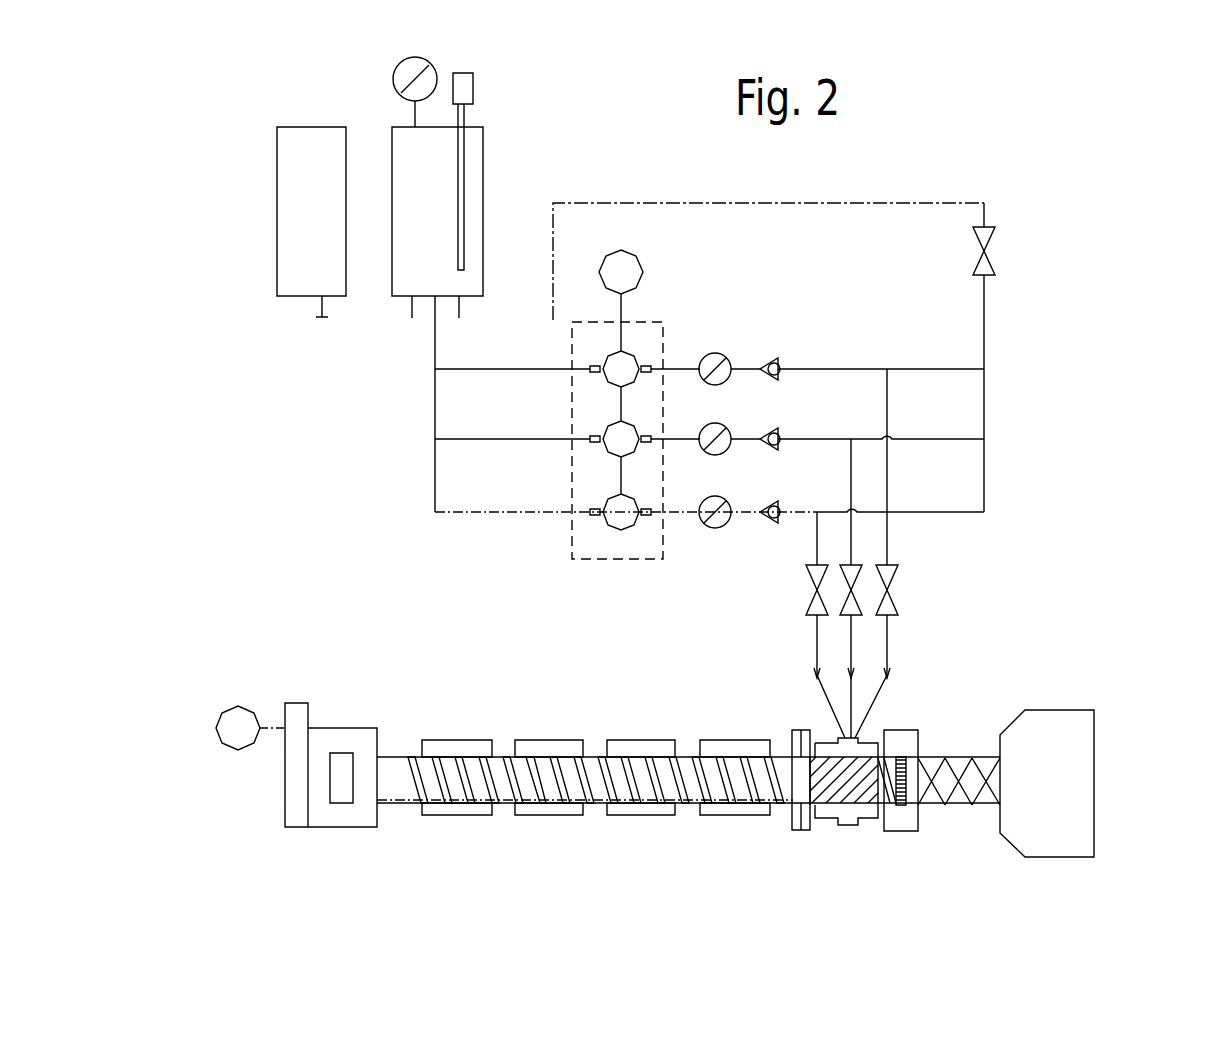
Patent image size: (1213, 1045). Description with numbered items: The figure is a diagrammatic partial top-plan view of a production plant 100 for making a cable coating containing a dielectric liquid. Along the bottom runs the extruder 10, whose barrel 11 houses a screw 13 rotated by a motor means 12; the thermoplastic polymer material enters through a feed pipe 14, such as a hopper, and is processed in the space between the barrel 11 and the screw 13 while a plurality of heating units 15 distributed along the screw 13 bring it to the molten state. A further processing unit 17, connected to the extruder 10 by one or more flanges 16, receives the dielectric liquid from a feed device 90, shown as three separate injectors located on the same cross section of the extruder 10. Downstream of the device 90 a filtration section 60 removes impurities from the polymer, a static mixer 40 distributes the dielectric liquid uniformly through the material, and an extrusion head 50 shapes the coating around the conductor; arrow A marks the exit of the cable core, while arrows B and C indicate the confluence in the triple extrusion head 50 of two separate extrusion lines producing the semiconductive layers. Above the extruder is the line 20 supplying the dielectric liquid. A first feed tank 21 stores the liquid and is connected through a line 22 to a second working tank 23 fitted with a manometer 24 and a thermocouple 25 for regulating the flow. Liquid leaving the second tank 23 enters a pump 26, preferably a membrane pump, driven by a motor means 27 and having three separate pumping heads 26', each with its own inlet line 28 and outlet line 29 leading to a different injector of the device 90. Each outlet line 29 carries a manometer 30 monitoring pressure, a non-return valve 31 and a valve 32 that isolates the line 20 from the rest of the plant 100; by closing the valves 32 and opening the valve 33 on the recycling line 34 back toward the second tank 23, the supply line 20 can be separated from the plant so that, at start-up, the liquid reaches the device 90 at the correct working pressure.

The extruder 10 is at (408, 850).
The barrel 11 is at (500, 757).
The motor means 12 is at (233, 722).
The screw 13 is at (425, 775).
The feed pipe 14 is at (340, 787).
The heating units 15 is at (735, 815).
The flanges 16 is at (800, 817).
The further processing unit 17 is at (828, 777).
The line for supplying the dielectric liquid 20 is at (1063, 182).
The first feed tank 21 is at (302, 252).
The line 22 is at (322, 315).
The second working tank 23 is at (432, 263).
The manometer 24 is at (408, 66).
The thermocouple 25 is at (458, 90).
The pump 26 is at (636, 487).
The pumping heads 26' is at (652, 310).
The motor means 27 is at (622, 265).
The inlet line 28 is at (500, 365).
The outlet line 29 is at (883, 405).
The manometer 30 is at (718, 365).
The non-return valve 31 is at (778, 368).
The valve 32 is at (892, 602).
The valve 33 is at (986, 233).
The recycling line 34 is at (912, 203).
The static mixer 40 is at (937, 807).
The extrusion head 50 is at (1057, 796).
The filtration section 60 is at (893, 817).
The device for feeding the dielectric liquid 90 is at (840, 820).
The plant 100 is at (244, 535).
The arrow A is at (1058, 633).
The arrow B is at (1010, 847).
The arrow C is at (1012, 718).